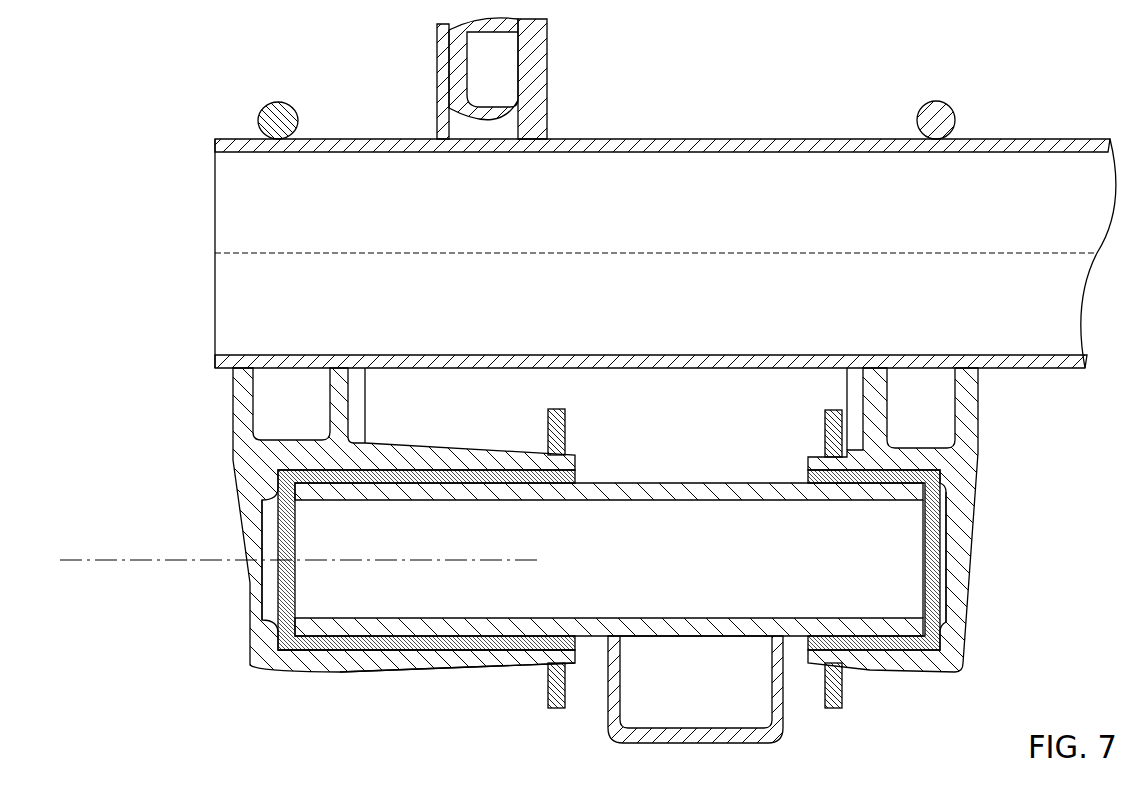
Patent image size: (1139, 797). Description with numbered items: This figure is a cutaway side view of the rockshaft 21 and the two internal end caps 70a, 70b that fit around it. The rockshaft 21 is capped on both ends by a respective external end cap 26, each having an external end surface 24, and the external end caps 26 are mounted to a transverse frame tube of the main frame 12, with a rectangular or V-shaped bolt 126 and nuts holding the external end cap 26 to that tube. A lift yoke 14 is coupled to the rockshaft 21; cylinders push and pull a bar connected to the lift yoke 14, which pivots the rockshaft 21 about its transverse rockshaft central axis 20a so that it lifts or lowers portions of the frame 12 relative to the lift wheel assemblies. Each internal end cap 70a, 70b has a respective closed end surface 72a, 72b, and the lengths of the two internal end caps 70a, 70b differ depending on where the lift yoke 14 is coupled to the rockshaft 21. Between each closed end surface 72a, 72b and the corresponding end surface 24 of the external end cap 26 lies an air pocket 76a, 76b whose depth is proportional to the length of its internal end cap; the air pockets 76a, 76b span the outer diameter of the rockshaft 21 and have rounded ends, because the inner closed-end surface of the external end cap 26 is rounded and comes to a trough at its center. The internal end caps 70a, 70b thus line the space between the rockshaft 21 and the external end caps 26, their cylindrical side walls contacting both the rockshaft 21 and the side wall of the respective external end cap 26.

The main frame 12 is at (369, 137).
The bolt 126 is at (272, 102).
The lift yoke 14 is at (563, 707).
The transverse rockshaft central axis 20a is at (135, 555).
The rockshaft 21 is at (705, 482).
The external end surface 24 is at (250, 607).
The external end cap 26 is at (487, 673).
The internal end cap 70a is at (890, 650).
The internal end cap 70b is at (408, 650).
The closed end surface 72a is at (946, 548).
The closed end surface 72b is at (277, 532).
The air pocket 76a is at (943, 583).
The air pocket 76b is at (273, 588).